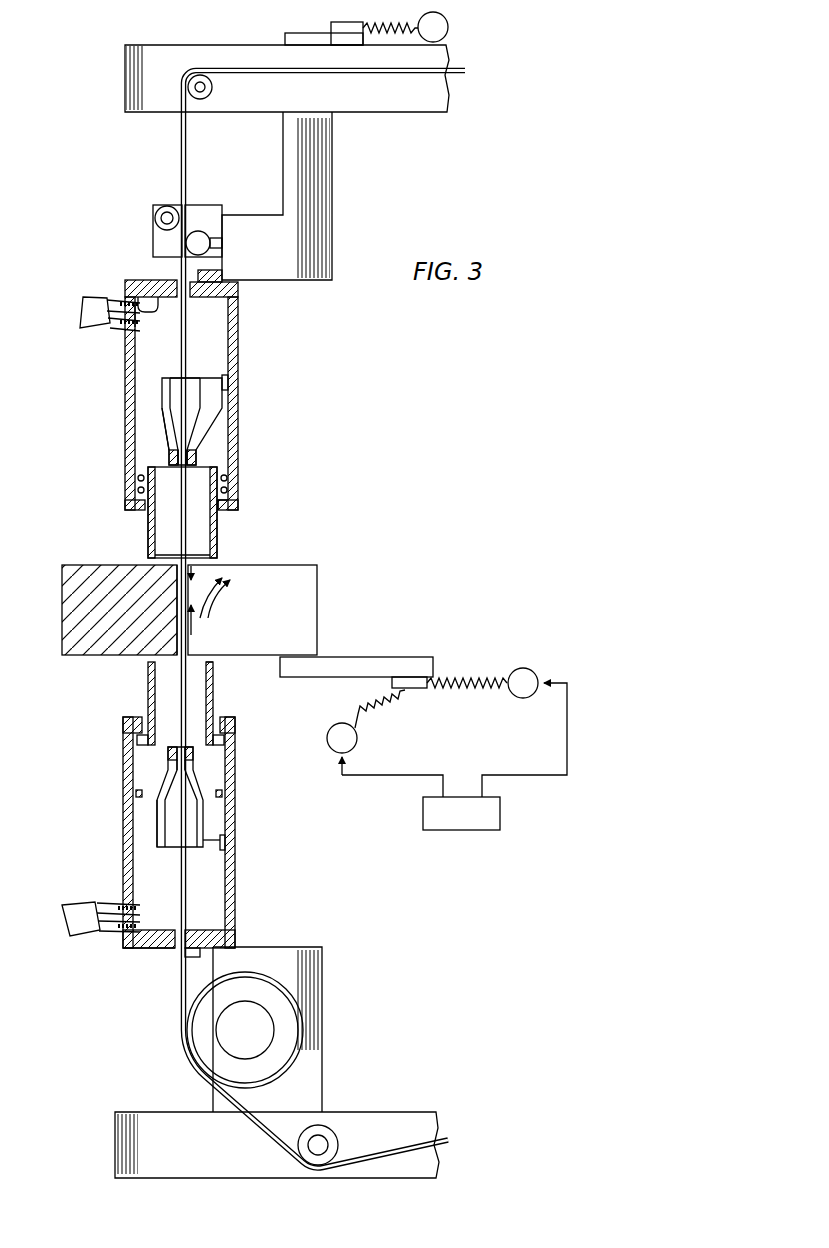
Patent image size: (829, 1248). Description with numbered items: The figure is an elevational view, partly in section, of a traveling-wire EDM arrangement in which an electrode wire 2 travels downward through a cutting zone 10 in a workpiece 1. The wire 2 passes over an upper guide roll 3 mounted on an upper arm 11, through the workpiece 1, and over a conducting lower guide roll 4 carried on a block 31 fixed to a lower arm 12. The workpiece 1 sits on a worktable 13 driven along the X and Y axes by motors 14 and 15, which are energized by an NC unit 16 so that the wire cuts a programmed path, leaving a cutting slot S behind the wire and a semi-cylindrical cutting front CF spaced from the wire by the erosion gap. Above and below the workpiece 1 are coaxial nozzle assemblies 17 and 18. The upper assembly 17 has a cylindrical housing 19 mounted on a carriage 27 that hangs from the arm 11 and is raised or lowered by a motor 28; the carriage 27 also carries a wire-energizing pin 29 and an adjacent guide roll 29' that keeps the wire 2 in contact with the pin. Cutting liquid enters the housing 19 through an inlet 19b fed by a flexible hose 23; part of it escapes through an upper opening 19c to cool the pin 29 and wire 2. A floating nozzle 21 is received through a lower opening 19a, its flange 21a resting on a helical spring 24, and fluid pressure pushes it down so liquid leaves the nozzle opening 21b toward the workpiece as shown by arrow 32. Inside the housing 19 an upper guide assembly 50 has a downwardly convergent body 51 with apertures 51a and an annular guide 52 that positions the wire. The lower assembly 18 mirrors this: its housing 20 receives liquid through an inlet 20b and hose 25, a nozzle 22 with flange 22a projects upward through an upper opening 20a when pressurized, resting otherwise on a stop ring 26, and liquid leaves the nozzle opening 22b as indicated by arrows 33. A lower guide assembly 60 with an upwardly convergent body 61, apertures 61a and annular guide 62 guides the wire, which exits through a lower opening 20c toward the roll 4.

The workpiece 1 is at (62, 598).
The electrode wire 2 is at (181, 150).
The upper guide roll 3 is at (204, 92).
The lower guide roll 4 is at (298, 1036).
The cutting zone 10 is at (172, 600).
The upper arm 11 is at (125, 72).
The lower arm 12 is at (115, 1128).
The worktable 13 is at (418, 657).
The X-axis motor 14 is at (523, 698).
The Y-axis motor 15 is at (357, 738).
The NC unit 16 is at (505, 812).
The upper nozzle assembly 17 is at (242, 375).
The lower nozzle assembly 18 is at (258, 797).
The upper cylindrical housing 19 is at (125, 350).
The lower opening 19a is at (235, 505).
The fluid inlet 19b is at (148, 300).
The upper opening 19c is at (152, 288).
The lower cylindrical housing 20 is at (123, 792).
The upper opening 20a is at (218, 730).
The fluid inlet 20b is at (130, 935).
The lower opening 20c is at (186, 952).
The upper cylindrical nozzle 21 is at (148, 522).
The circular flange 21a is at (226, 480).
The nozzle opening 21b is at (196, 543).
The lower cylindrical nozzle 22 is at (148, 690).
The circular flange 22a is at (140, 740).
The nozzle opening 22b is at (214, 668).
The flexible hose 23 is at (85, 296).
The helical spring 24 is at (138, 476).
The flexible hose 25 is at (78, 905).
The stop ring 26 is at (137, 790).
The carriage 27 is at (332, 162).
The motor 28 is at (448, 24).
The wire-energizing pin 29 is at (212, 213).
The guide roll 29' is at (138, 215).
The block 31 is at (322, 967).
The arrow 32 is at (200, 566).
The arrows 33 is at (200, 620).
The upper wire-positioning guide assembly 50 is at (212, 412).
The downwardly convergent tubular body 51 is at (198, 378).
The apertures 51a is at (164, 407).
The annular guide 52 is at (192, 448).
The lower wire-positioning guide assembly 60 is at (150, 805).
The upwardly convergent tubular body 61 is at (158, 825).
The apertures 61a is at (200, 828).
The annular guide 62 is at (186, 758).
The cutting slot S is at (292, 575).
The cutting front CF is at (178, 623).